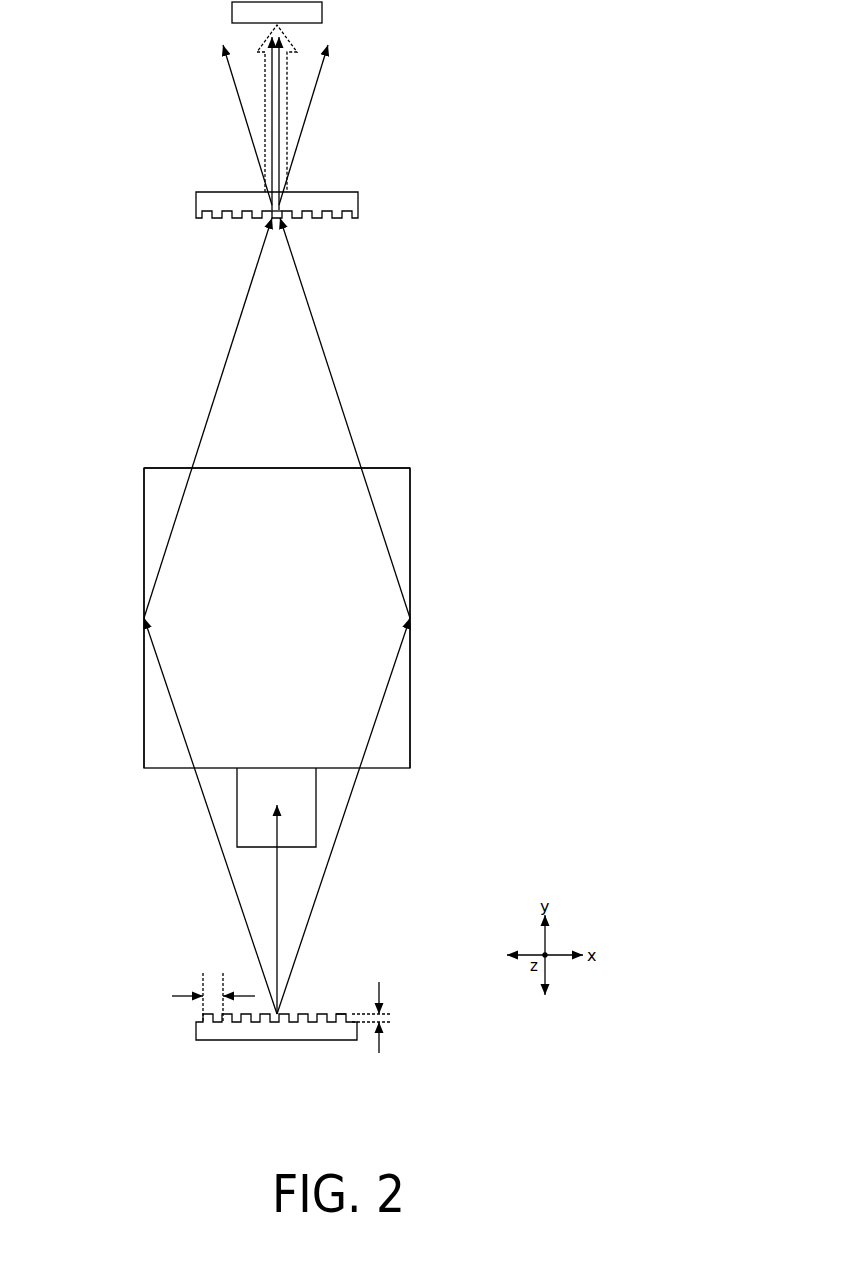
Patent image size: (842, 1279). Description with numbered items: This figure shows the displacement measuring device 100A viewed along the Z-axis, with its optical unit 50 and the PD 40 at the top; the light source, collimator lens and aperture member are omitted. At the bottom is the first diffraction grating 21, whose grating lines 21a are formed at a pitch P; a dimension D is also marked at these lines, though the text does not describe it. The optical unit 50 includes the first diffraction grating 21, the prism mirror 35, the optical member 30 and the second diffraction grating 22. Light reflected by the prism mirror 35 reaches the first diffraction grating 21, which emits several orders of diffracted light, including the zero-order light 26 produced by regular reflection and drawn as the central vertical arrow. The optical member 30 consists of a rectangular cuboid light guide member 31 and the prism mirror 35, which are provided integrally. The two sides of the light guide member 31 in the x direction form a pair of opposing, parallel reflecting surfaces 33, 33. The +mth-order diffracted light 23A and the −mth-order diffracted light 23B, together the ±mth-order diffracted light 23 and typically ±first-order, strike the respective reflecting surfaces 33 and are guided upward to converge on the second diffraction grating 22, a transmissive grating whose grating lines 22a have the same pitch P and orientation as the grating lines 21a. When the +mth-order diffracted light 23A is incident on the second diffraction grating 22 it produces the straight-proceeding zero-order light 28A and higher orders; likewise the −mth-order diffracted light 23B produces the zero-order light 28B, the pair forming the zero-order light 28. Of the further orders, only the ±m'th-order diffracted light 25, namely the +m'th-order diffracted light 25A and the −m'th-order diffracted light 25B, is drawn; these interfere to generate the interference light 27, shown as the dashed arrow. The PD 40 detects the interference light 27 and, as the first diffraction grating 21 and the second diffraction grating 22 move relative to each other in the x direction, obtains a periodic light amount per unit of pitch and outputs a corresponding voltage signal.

The displacement measuring device 100A is at (485, 62).
The PD (photodetector) 40 is at (313, 12).
The zero-order light 28 is at (142, 58).
The zero-order light 28A is at (227, 63).
The zero-order light 28B is at (280, 63).
The ±m'th-order diffracted light 25 is at (402, 62).
The +m'th-order diffracted light 25A is at (285, 83).
The −m'th-order diffracted light 25B is at (273, 115).
The interference light 27 is at (285, 132).
The second diffraction grating 22 is at (210, 196).
The grating lines 22a is at (211, 220).
The ±mth-order diffracted light 23 is at (395, 297).
The +mth-order diffracted light 23A is at (312, 317).
The −mth-order diffracted light 23B is at (228, 360).
The optical unit 50 is at (462, 383).
The optical member 30 is at (164, 458).
The light guide member 31 is at (277, 485).
The reflecting surfaces 33 is at (144, 540).
The prism mirror 35 is at (301, 799).
The zero-order light 26 is at (276, 882).
The first diffraction grating 21 is at (309, 1031).
The grating lines 21a is at (333, 1014).
The pitch P is at (213, 994).
The grating depth D is at (380, 1019).